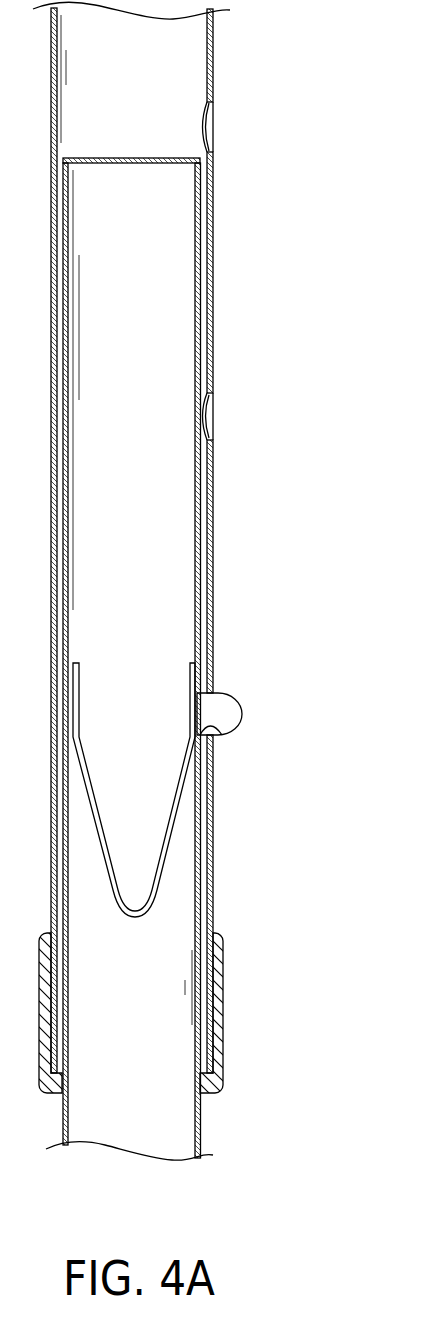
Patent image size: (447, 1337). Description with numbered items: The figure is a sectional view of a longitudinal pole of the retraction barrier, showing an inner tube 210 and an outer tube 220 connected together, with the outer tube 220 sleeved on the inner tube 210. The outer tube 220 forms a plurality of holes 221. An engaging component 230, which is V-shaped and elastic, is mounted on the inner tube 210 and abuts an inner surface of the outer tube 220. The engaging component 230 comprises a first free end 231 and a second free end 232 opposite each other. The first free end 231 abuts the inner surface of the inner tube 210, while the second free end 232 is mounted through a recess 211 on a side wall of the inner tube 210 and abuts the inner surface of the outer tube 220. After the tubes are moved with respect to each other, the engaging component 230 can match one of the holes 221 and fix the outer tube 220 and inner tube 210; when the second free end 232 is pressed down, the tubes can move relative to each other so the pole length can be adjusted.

The inner tube 210 is at (200, 1125).
The recess 211 is at (218, 730).
The outer tube 220 is at (213, 270).
The hole 221 is at (212, 419).
The engaging component 230 is at (232, 779).
The first free end 231 is at (78, 692).
The second free end 232 is at (255, 730).